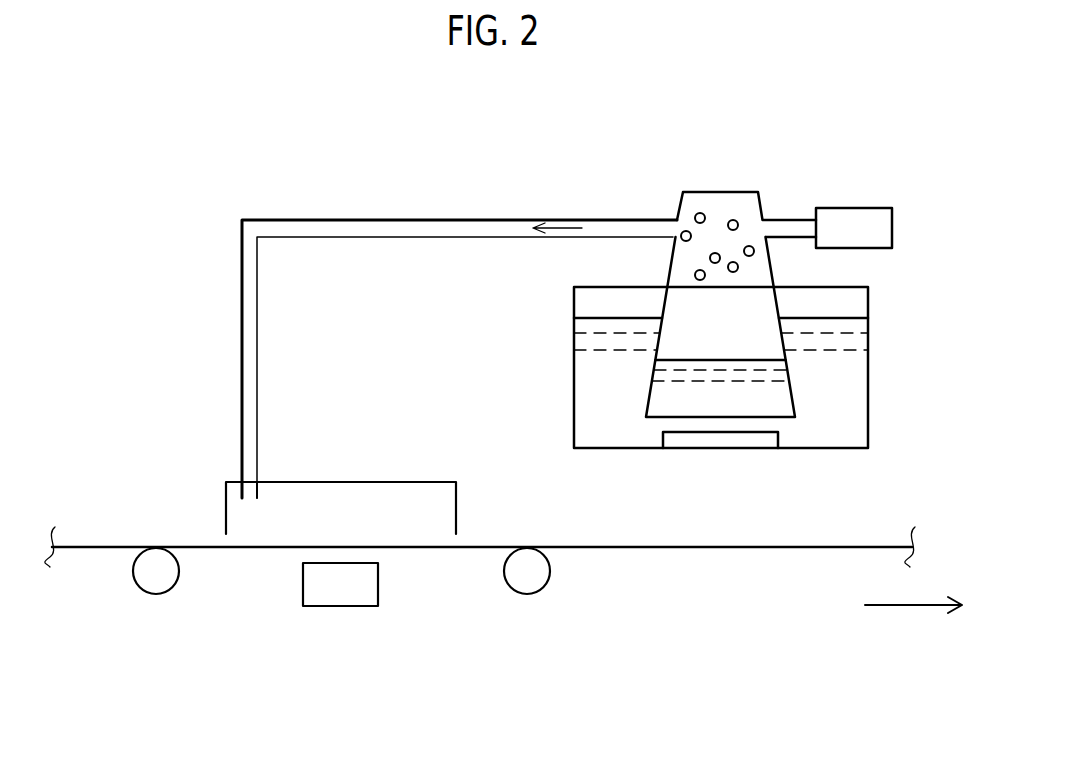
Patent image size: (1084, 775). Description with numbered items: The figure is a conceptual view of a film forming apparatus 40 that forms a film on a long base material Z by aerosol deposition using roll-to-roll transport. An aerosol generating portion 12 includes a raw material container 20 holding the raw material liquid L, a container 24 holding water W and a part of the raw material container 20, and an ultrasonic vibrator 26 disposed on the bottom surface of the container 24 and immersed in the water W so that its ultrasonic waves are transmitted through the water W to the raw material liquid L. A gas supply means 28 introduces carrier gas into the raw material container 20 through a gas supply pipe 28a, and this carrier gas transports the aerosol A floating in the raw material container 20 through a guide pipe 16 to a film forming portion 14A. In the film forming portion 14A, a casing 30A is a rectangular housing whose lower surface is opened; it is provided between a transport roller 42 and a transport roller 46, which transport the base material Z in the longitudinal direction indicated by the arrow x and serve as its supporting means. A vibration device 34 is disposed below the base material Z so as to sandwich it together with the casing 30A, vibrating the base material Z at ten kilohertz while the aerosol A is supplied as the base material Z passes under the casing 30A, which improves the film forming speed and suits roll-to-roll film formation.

The aerosol generating portion 12 is at (843, 141).
The film forming portion 14A is at (378, 456).
The guide pipe 16 is at (472, 228).
The raw material container 20 is at (730, 205).
The container 24 is at (573, 355).
The ultrasonic vibrator 26 is at (715, 440).
The gas supply means 28 is at (873, 227).
The gas supply pipe 28a is at (792, 230).
The casing 30A is at (227, 497).
The vibration device 34 is at (337, 590).
The film forming apparatus 40 is at (248, 667).
The transport roller 42 is at (158, 594).
The transport roller 46 is at (527, 594).
The aerosol A is at (700, 212).
The raw material liquid L is at (675, 398).
The water W is at (840, 409).
The base material Z is at (800, 549).
The transport direction arrow x is at (912, 608).